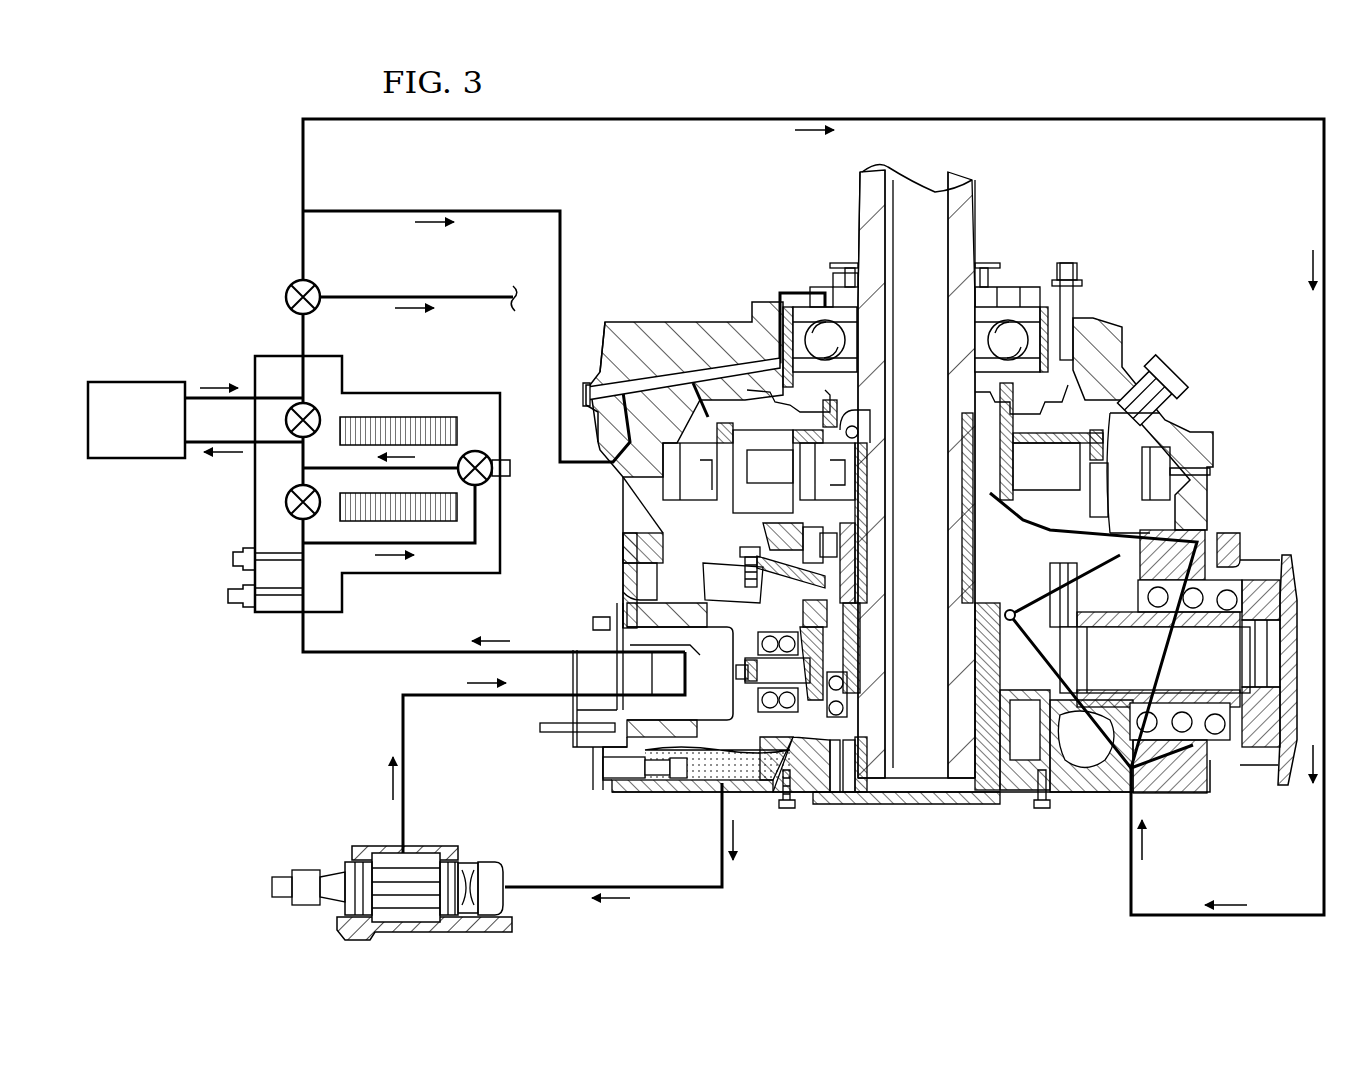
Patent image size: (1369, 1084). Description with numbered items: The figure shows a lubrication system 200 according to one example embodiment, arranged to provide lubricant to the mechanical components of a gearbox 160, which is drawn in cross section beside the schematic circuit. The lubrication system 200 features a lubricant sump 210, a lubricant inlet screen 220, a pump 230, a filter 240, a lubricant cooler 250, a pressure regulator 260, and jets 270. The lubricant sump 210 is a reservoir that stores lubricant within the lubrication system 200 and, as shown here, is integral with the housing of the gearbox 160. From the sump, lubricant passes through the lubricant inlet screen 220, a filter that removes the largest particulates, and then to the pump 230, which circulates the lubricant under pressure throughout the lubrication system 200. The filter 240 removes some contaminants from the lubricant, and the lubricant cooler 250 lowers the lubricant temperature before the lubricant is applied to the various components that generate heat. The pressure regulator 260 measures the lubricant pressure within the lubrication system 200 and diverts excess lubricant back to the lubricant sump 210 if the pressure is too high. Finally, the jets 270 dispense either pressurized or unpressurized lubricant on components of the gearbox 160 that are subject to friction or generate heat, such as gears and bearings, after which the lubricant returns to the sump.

The gearbox 160 is at (1147, 308).
The lubrication system 200 is at (228, 174).
The lubricant sump 210 is at (672, 785).
The lubricant inlet screen 220 is at (283, 878).
The pump 230 is at (572, 756).
The filter 240 is at (458, 500).
The lubricant cooler 250 is at (137, 382).
The pressure regulator 260 is at (285, 296).
The jets 270 is at (622, 152).